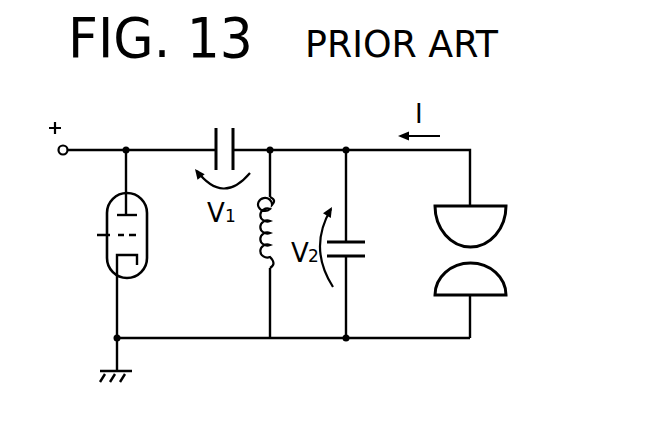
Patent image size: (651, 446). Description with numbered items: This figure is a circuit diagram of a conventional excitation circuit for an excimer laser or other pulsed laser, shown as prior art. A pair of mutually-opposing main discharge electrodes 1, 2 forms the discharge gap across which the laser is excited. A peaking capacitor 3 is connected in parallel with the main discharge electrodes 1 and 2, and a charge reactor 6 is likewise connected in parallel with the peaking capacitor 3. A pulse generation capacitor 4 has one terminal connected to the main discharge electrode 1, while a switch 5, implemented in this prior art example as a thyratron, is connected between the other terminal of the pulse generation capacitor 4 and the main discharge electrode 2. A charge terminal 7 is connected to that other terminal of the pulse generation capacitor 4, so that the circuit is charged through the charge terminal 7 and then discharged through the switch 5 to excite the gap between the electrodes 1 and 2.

The main discharge electrode 1 is at (488, 222).
The main discharge electrode 2 is at (497, 285).
The peaking capacitor 3 is at (357, 236).
The pulse generation capacitor 4 is at (225, 121).
The switch 5 is at (98, 265).
The charge reactor 6 is at (260, 252).
The charge terminal 7 is at (62, 155).